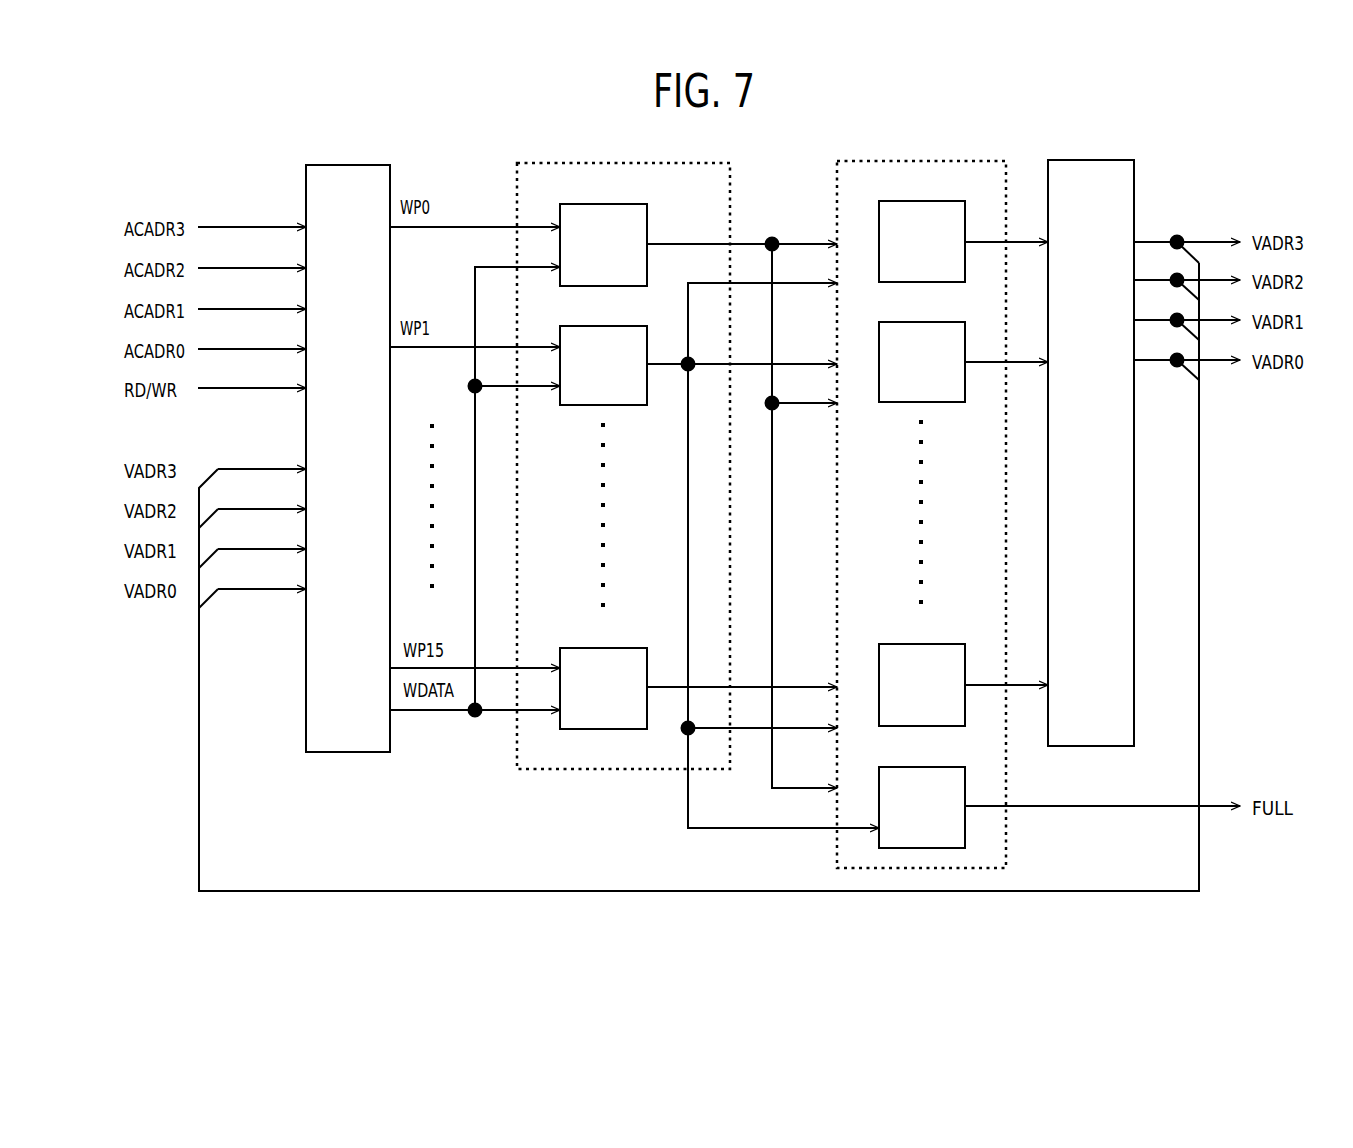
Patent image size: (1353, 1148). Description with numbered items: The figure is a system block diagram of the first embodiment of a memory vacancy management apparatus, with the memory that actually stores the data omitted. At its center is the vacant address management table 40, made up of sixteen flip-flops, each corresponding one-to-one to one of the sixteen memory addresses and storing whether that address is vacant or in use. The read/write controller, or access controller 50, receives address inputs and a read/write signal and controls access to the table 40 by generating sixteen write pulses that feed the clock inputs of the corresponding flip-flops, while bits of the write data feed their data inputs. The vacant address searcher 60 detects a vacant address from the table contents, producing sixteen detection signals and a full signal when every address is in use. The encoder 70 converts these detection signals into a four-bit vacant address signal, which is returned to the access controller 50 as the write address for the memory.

The read/write controller (access controller) 50 is at (367, 165).
The vacant address management table (VTBL) 40 is at (665, 163).
The vacant address searcher (VSCH) 60 is at (940, 161).
The encoder 70 is at (1100, 160).